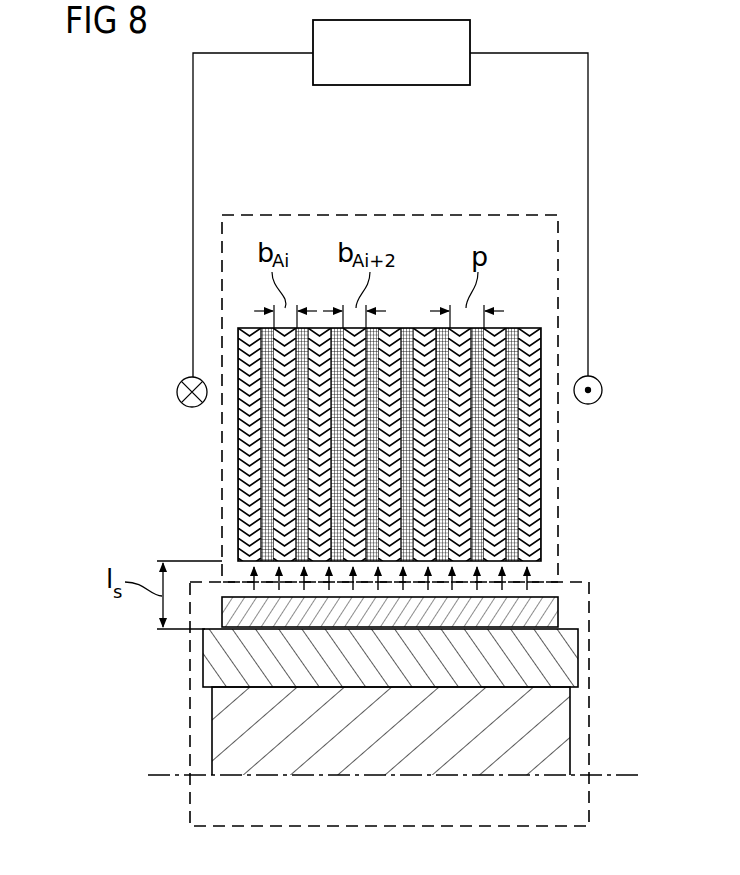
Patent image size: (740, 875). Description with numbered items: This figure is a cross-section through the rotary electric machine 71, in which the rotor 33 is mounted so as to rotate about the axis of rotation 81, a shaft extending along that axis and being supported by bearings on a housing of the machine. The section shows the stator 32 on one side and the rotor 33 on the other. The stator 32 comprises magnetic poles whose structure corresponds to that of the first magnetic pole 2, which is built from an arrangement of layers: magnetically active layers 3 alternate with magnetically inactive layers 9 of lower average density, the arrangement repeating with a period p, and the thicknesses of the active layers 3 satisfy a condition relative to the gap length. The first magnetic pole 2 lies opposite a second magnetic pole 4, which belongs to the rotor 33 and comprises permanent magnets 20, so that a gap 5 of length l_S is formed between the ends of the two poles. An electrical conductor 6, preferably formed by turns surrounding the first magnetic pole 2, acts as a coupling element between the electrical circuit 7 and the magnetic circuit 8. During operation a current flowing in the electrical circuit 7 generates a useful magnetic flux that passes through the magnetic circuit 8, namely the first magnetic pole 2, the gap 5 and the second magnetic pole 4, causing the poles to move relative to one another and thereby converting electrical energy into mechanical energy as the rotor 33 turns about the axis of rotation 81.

The first magnetic pole 2 is at (411, 444).
The magnetically active layers 3 is at (268, 507).
The second magnetic pole 4 is at (585, 656).
The gap 5 is at (540, 582).
The electrical conductor 6 is at (603, 390).
The electrical circuit 7 is at (470, 37).
The magnetic circuit 8 is at (592, 797).
The magnetically inactive layers 9 is at (513, 523).
The permanent magnets 20 is at (542, 613).
The stator 32 is at (152, 447).
The rotor 33 is at (142, 655).
The rotary electric machine 71 is at (491, 197).
The axis of rotation 81 is at (630, 772).